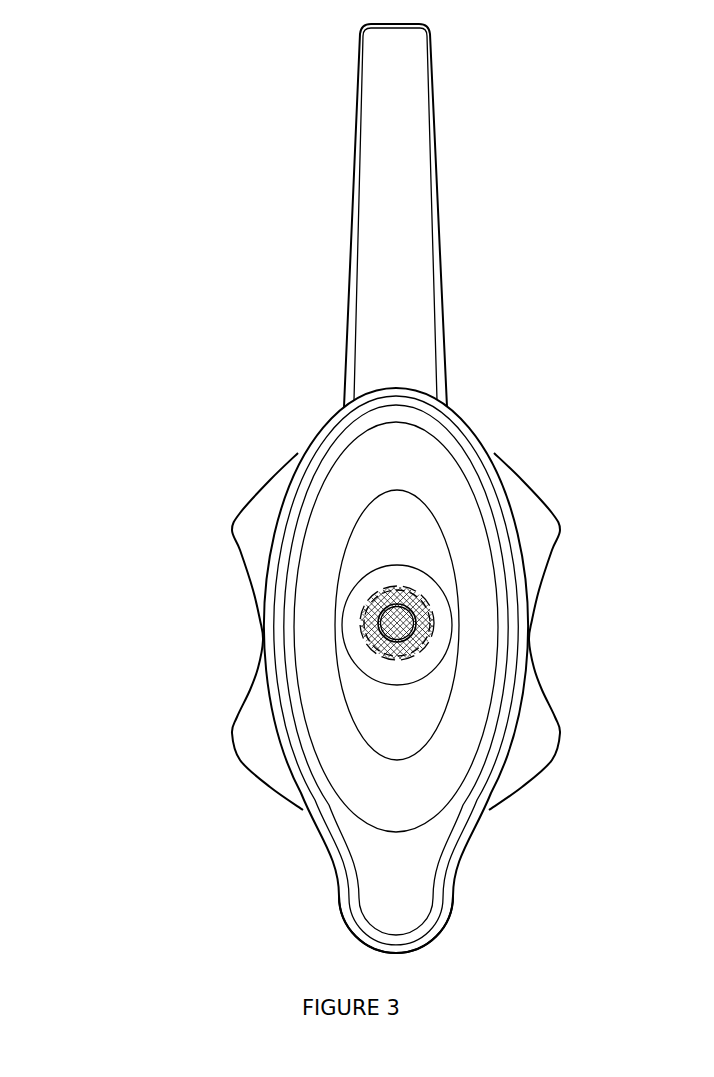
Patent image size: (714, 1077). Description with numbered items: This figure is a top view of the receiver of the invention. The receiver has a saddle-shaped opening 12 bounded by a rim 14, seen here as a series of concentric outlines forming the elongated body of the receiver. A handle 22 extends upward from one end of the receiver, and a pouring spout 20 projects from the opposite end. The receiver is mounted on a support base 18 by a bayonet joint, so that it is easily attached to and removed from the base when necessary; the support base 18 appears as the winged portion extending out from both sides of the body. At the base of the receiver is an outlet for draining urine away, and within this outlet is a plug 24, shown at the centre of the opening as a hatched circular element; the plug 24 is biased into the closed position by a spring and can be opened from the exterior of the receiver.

The handle 22 is at (385, 218).
The rim 14 is at (318, 423).
The saddle-shaped opening 12 is at (318, 469).
The support base 18 is at (262, 548).
The plug 24 is at (385, 628).
The pouring spout 20 is at (395, 895).